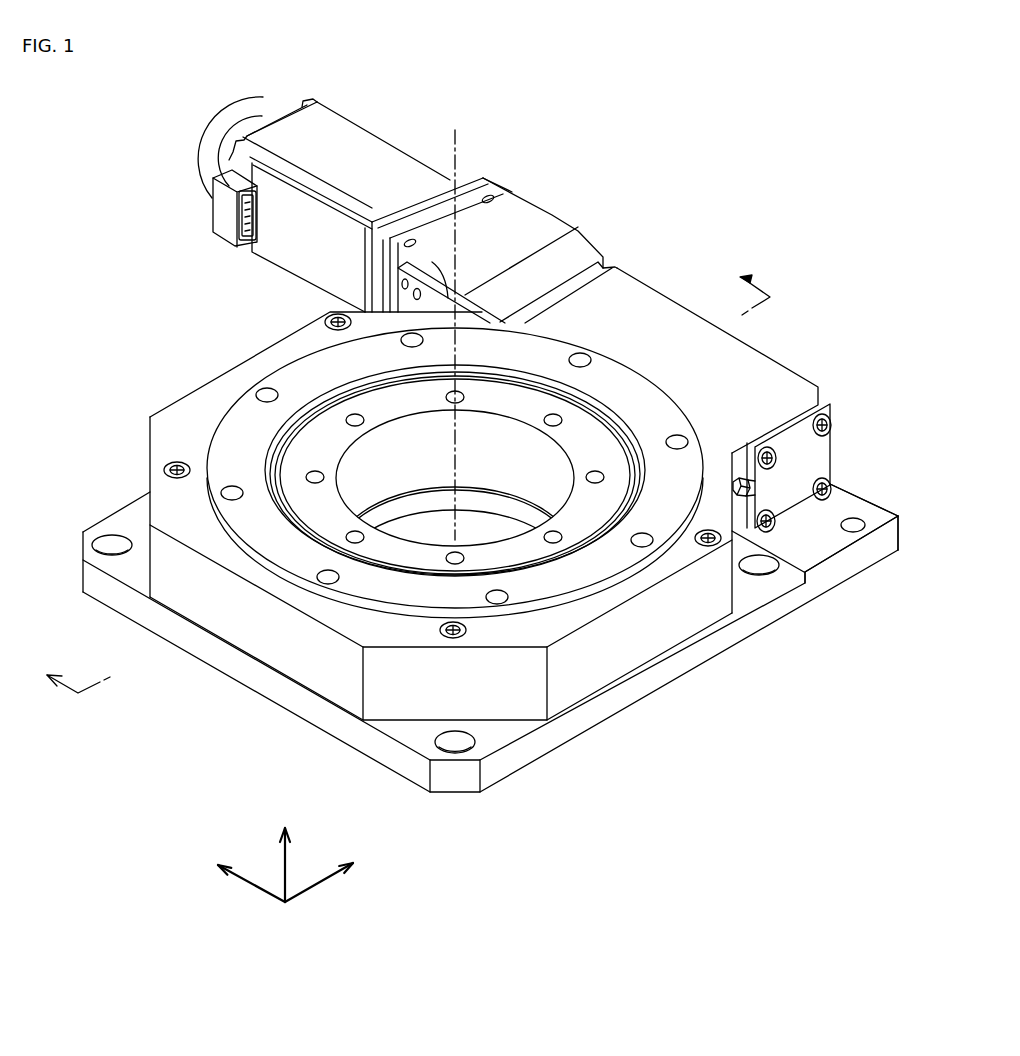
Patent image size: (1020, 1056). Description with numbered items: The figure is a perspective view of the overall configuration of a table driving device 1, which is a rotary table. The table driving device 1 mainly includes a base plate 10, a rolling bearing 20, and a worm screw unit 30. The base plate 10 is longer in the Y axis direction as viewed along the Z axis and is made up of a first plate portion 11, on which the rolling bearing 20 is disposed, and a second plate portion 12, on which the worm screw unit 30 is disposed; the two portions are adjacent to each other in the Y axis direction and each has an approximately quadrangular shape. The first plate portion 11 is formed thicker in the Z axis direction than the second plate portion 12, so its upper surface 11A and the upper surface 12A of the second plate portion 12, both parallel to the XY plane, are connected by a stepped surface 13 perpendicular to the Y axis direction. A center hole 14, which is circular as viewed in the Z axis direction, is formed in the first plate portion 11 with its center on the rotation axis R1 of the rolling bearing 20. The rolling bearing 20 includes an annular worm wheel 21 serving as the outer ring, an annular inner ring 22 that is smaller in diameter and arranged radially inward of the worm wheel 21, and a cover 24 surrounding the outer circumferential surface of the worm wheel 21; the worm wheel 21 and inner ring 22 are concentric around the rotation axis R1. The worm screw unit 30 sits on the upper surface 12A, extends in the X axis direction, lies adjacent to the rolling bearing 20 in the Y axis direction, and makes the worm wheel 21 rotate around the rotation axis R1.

The table driving device 1 is at (740, 182).
The base plate 10 is at (125, 600).
The first plate portion 11 is at (713, 642).
The upper surface 11A is at (410, 730).
The second plate portion 12 is at (843, 573).
The upper surface 12A is at (848, 542).
The stepped surface 13 is at (803, 577).
The center hole 14 is at (473, 538).
The rolling bearing 20 is at (160, 400).
The worm wheel 21 is at (252, 417).
The inner ring 22 is at (322, 433).
The cover 24 is at (175, 520).
The worm screw unit 30 is at (643, 271).
The rotation axis R1 is at (458, 138).